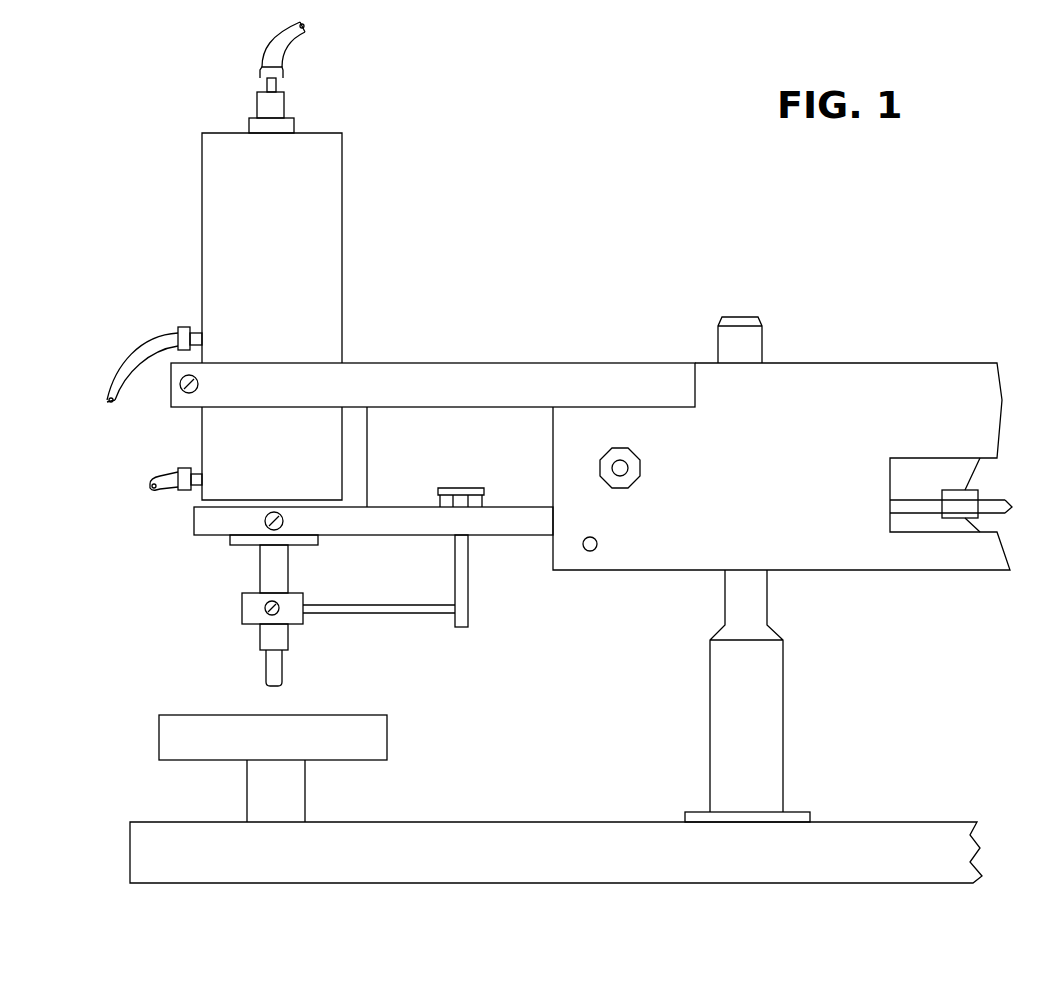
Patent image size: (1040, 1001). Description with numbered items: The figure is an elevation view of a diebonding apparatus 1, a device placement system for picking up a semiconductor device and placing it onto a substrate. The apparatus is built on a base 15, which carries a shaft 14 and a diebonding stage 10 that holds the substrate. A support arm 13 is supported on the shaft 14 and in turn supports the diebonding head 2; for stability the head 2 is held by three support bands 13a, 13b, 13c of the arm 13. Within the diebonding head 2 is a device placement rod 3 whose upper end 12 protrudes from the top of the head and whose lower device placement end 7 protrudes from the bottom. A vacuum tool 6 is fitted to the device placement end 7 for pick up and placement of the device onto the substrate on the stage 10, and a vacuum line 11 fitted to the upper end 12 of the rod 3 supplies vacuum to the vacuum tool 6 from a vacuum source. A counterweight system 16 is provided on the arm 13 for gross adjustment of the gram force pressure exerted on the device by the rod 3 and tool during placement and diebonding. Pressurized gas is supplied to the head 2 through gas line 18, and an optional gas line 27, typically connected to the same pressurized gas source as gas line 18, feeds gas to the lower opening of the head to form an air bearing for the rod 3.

The diebonding apparatus 1 is at (563, 310).
The diebonding head 2 is at (344, 248).
The device placement rod 3 is at (284, 105).
The vacuum tool 6 is at (265, 673).
The device placement end 7 is at (290, 635).
The diebonding stage 10 is at (347, 715).
The vacuum line 11 is at (305, 30).
The upper end 12 is at (266, 85).
The support arm 13 is at (832, 357).
The support band 13a is at (315, 378).
The support band 13b is at (363, 523).
The support band 13c is at (398, 613).
The shaft 14 is at (767, 609).
The base 15 is at (843, 822).
The counterweight system 16 is at (1012, 525).
The gas line 18 is at (170, 338).
The gas line 27 is at (172, 490).